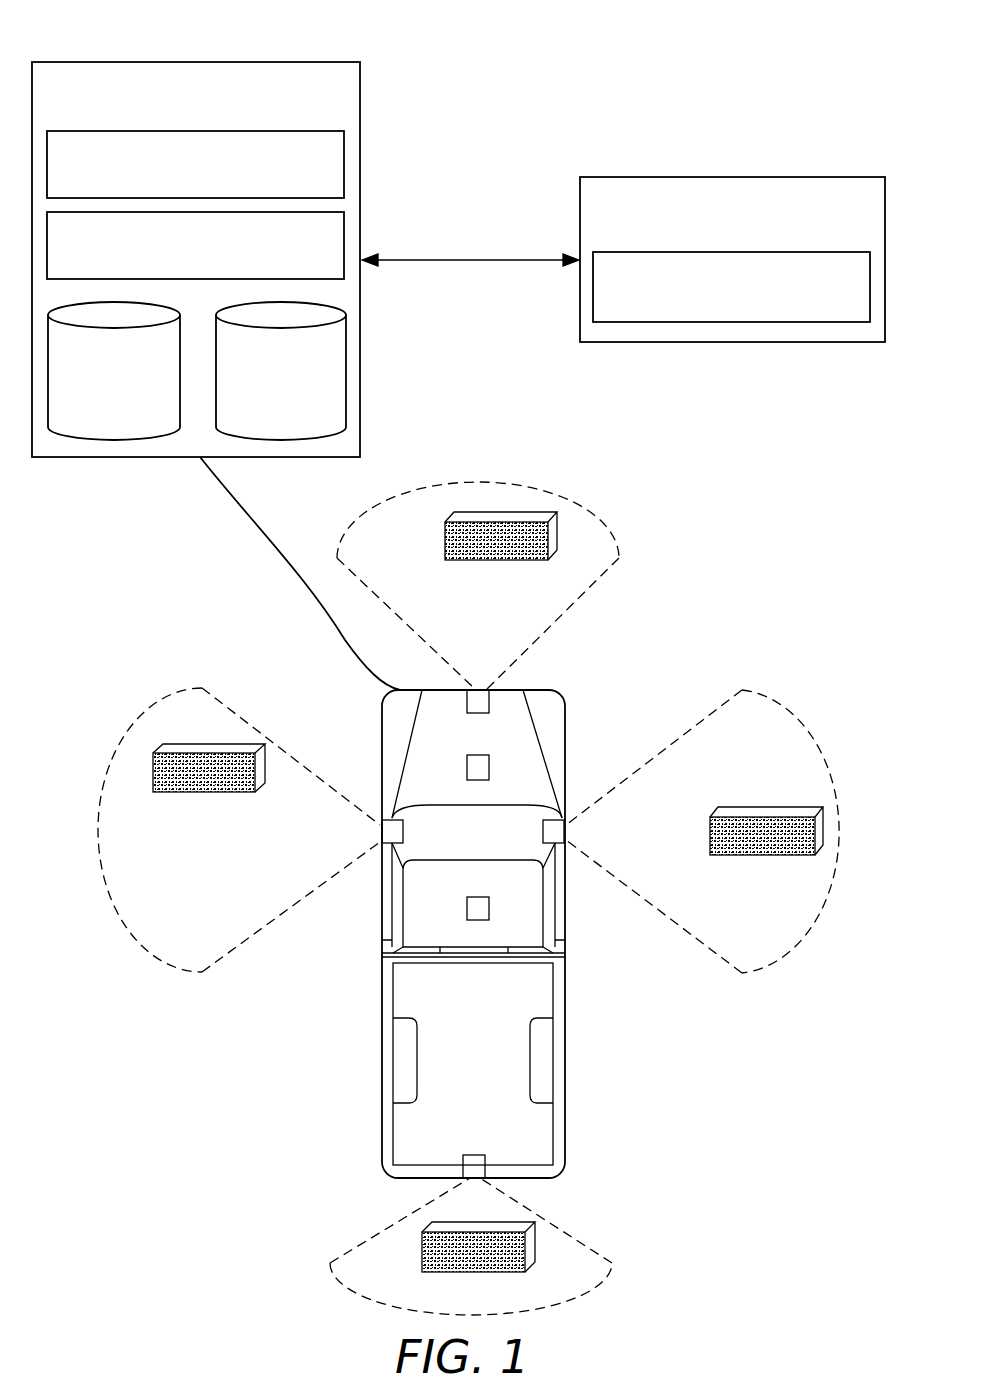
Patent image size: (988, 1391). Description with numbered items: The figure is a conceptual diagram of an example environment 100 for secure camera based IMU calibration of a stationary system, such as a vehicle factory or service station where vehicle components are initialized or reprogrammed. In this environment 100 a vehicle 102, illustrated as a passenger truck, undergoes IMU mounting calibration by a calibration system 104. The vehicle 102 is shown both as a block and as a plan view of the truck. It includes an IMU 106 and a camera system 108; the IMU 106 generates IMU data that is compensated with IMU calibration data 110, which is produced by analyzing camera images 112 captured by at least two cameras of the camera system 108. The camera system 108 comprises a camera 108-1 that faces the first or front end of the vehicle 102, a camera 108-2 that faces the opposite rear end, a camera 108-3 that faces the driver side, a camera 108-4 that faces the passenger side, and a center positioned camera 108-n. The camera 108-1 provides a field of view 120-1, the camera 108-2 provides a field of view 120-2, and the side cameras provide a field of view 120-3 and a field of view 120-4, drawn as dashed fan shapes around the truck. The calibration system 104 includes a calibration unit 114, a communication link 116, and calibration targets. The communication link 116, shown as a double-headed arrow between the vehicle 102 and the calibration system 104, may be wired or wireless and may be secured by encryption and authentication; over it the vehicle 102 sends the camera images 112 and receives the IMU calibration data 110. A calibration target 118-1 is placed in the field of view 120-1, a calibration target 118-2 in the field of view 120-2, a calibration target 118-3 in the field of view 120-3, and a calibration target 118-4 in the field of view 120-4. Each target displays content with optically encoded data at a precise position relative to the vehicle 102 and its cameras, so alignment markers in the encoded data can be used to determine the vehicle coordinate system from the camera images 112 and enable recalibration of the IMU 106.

The environment 100 is at (110, 40).
The vehicle 102 is at (567, 1085).
The calibration system 104 is at (747, 236).
The IMU 106 is at (490, 765).
The camera system 108 is at (211, 270).
The camera 108-1 is at (489, 694).
The camera 108-2 is at (463, 1155).
The camera 108-3 is at (381, 833).
The camera 108-4 is at (566, 832).
The camera 108-n is at (467, 910).
The IMU calibration data 110 is at (129, 428).
The camera images 112 is at (296, 416).
The calibration unit 114 is at (747, 308).
The communication link 116 is at (400, 258).
The calibration target 118-1 is at (553, 512).
The calibration target 118-2 is at (535, 1240).
The calibration target 118-3 is at (215, 745).
The calibration target 118-4 is at (773, 807).
The field of view 120-1 is at (619, 558).
The field of view 120-2 is at (612, 1263).
The field of view 120-3 is at (202, 688).
The field of view 120-4 is at (742, 690).